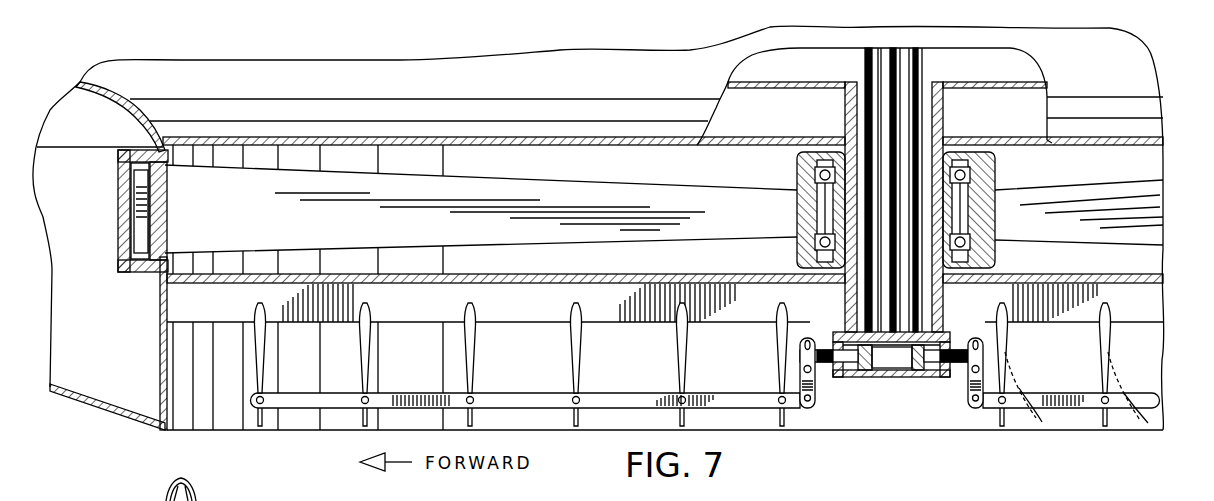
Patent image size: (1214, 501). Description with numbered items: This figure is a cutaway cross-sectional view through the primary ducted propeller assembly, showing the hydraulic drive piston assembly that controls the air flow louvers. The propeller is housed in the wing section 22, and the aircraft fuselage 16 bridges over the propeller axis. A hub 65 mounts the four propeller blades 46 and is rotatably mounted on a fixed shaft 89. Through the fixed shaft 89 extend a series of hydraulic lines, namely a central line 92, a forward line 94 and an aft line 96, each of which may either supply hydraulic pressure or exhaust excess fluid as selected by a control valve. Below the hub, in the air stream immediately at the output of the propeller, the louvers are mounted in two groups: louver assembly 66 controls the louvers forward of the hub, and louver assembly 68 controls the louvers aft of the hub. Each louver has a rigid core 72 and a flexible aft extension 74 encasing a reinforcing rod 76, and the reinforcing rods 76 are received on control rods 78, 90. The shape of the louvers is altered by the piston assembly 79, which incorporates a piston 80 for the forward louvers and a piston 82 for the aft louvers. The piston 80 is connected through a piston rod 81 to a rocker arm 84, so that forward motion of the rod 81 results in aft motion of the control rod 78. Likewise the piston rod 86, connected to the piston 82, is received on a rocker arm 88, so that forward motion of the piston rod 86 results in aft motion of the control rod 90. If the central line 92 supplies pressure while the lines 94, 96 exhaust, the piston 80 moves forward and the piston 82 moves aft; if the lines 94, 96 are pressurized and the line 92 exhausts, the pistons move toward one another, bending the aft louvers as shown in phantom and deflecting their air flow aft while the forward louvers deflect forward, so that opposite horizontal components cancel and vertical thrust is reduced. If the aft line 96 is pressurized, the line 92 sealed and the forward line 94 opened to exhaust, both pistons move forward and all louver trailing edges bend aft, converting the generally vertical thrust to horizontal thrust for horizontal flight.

The aircraft fuselage 16 is at (1137, 110).
The wing section 22 is at (107, 417).
The blades 46 is at (590, 197).
The hub 65 is at (797, 173).
The louver assembly 66 is at (594, 436).
The louver assembly 68 is at (1040, 437).
The rigid core 72 is at (573, 334).
The flexible aft extension 74 is at (362, 414).
The reinforcing rod 76 is at (463, 397).
The control rod 78 is at (627, 401).
The piston assembly 79 is at (886, 384).
The piston 80 is at (866, 370).
The piston rod 81 is at (827, 351).
The piston 82 is at (919, 370).
The rocker arm 84 is at (800, 383).
The piston rod 86 is at (958, 352).
The rocker arm 88 is at (983, 383).
The fixed shaft 89 is at (852, 112).
The control rod 90 is at (1073, 408).
The central line 92 is at (897, 127).
The forward line 94 is at (870, 66).
The aft line 96 is at (925, 70).